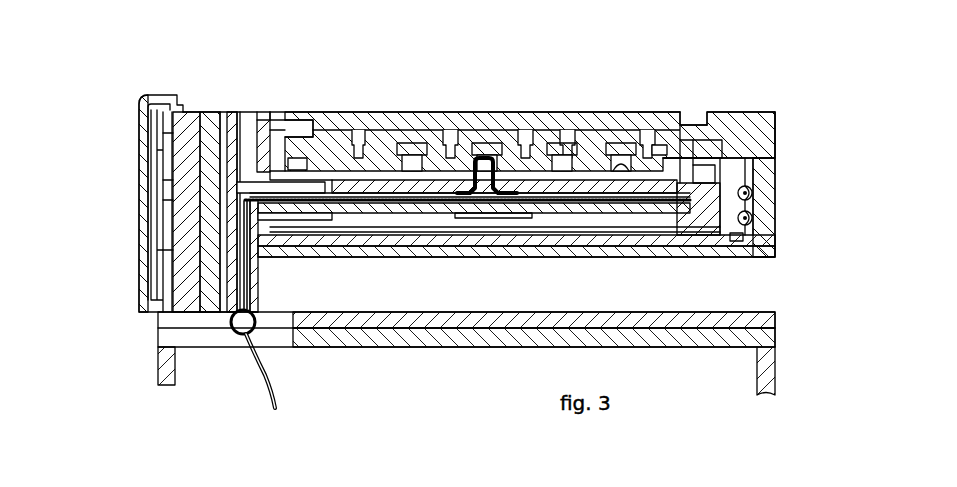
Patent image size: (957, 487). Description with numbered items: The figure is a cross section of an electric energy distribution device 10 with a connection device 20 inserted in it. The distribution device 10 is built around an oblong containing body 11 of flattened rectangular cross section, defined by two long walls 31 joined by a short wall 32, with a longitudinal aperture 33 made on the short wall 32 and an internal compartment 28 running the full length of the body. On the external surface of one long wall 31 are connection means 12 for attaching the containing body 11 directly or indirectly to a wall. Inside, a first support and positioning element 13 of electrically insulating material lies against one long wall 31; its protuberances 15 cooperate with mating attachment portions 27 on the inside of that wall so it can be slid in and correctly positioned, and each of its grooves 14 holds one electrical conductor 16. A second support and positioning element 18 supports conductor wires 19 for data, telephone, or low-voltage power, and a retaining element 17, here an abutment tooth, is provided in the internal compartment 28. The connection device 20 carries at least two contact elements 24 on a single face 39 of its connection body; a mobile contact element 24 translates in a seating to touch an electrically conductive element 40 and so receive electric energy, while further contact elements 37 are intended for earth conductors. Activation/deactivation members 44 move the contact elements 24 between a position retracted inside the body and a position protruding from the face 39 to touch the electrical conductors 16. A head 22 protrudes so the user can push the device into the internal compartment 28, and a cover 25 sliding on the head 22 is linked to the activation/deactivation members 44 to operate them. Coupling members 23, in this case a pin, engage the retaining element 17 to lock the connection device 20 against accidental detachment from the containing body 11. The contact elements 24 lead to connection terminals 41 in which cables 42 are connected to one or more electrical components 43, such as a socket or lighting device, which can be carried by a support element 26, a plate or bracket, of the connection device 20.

The electric energy distribution device 10 is at (792, 55).
The containing body 11 is at (784, 186).
The connection means 12 is at (278, 150).
The first support and positioning element 13 is at (388, 140).
The grooves 14 is at (424, 162).
The protuberances 15 is at (390, 128).
The electrical conductors 16 is at (407, 148).
The retaining element 17 is at (747, 158).
The second support and positioning element 18 is at (738, 241).
The conductor wires 19 is at (752, 219).
The connection device 20 is at (136, 110).
The head 22 is at (183, 232).
The coupling members 23 is at (766, 174).
The contact elements 24 is at (487, 158).
The cover 25 is at (144, 185).
The support element 26 is at (512, 322).
The attachment portions 27 is at (303, 122).
The internal compartment 28 is at (507, 232).
The long walls 31 is at (543, 122).
The short wall 32 is at (277, 172).
The longitudinal aperture 33 is at (224, 178).
The contact elements 37 is at (298, 160).
The face 39 is at (408, 178).
The electrically conductive element 40 is at (422, 181).
The connection terminals 41 is at (229, 324).
The cables 42 is at (274, 390).
The electrical components 43 is at (752, 375).
The activation/deactivation members 44 is at (213, 118).